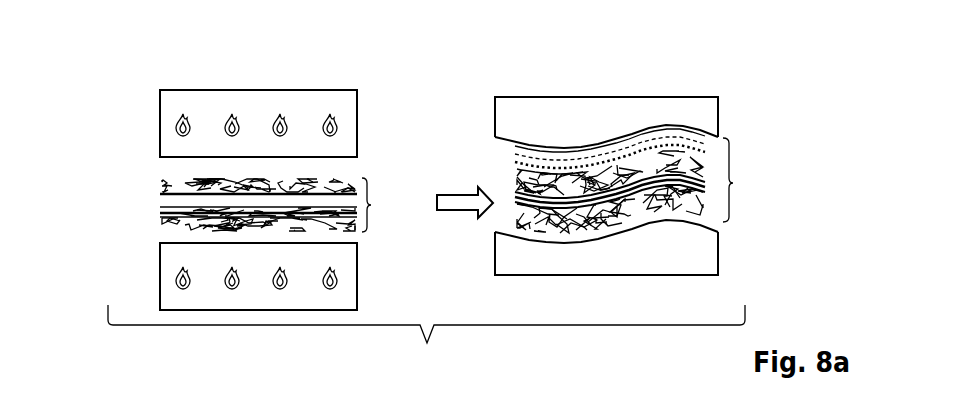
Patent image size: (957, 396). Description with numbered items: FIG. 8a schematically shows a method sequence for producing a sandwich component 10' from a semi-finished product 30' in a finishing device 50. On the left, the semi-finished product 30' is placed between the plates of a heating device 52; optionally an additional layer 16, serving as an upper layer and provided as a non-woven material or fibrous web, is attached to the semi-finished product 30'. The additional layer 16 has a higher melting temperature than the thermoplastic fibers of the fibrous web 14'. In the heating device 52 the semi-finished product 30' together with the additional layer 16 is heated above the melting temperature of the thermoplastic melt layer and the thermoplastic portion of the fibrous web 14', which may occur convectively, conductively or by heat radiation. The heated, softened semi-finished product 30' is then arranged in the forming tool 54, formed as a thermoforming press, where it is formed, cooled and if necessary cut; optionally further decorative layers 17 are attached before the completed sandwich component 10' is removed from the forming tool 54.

The heating device 52 is at (313, 75).
The forming tool 54 is at (683, 75).
The additional layer 16 is at (152, 180).
The fibrous web 14' is at (130, 283).
The semi-finished product 30' is at (241, 208).
The decorative layers 17 is at (690, 152).
The sandwich component 10' is at (648, 154).
The finishing device 50 is at (426, 342).